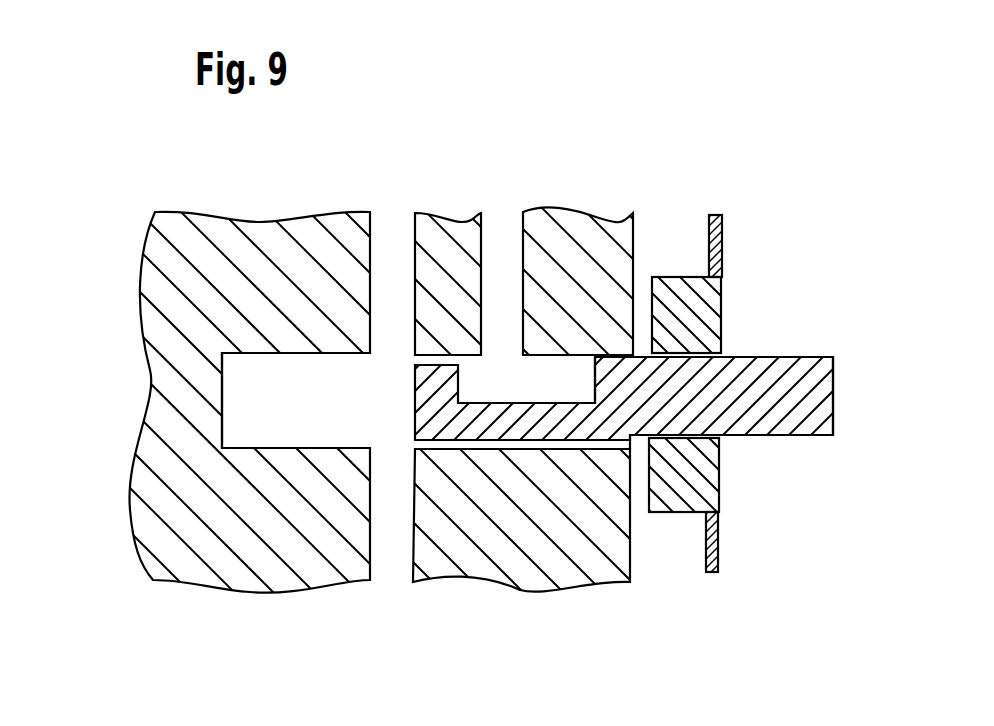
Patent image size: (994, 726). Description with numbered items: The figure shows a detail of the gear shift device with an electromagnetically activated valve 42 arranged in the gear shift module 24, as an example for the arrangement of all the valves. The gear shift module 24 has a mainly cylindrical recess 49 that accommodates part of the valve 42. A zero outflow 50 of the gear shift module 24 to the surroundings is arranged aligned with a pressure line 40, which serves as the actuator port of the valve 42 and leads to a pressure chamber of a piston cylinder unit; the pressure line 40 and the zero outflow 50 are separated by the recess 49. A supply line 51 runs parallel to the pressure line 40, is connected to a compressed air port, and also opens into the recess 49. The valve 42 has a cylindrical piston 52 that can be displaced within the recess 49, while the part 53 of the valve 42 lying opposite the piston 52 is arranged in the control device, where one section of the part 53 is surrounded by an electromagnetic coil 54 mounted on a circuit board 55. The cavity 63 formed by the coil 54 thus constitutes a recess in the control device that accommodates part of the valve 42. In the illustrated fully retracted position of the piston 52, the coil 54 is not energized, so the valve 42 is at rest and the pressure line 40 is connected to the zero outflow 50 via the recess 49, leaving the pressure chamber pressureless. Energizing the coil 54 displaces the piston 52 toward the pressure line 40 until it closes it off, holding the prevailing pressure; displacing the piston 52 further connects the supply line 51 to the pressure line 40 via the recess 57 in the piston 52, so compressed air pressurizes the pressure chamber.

The gear shift module 24 is at (118, 202).
The pressure line 40 is at (392, 228).
The valve 42 is at (635, 400).
The recess 49 is at (222, 397).
The zero outflow 50 is at (392, 563).
The supply line 51 is at (496, 228).
The piston 52 is at (510, 422).
The part of the valve 53 is at (834, 388).
The electromagnetic coil 54 is at (692, 302).
The circuit board 55 is at (717, 252).
The recess in the piston 57 is at (563, 383).
The cavity 63 is at (695, 437).